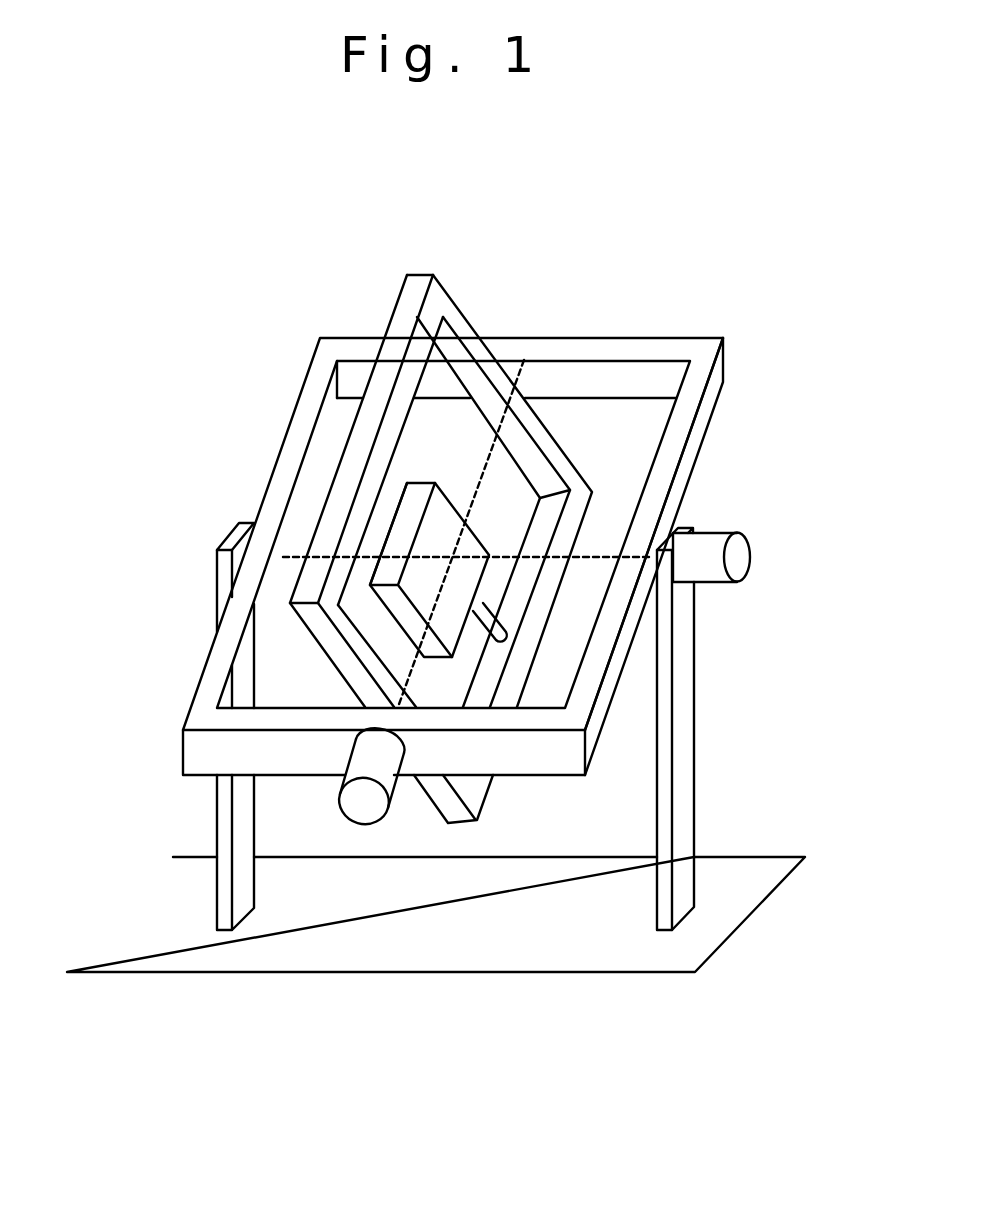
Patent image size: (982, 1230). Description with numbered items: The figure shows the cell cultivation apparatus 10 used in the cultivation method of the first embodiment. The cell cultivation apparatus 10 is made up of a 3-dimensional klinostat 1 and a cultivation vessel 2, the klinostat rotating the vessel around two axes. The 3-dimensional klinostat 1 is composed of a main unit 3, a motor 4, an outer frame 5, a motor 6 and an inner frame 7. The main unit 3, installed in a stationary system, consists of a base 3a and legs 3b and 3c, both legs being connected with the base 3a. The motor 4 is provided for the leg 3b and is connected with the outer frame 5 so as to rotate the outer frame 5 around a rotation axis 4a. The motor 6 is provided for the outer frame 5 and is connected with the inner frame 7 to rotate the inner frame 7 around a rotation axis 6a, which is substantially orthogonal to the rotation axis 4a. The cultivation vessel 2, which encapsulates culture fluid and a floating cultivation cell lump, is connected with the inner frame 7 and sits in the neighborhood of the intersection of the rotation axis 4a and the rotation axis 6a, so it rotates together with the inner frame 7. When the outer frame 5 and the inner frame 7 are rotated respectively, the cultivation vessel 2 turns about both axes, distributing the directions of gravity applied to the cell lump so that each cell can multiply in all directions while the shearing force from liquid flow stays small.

The cell cultivation apparatus 10 is at (663, 215).
The 3-dimensional klinostat 1 is at (567, 350).
The cultivation vessel 2 is at (413, 502).
The main unit 3 is at (147, 923).
The base 3a is at (567, 938).
The leg 3b is at (683, 727).
The leg 3c is at (225, 572).
The motor 4 is at (700, 552).
The rotation axis 4a is at (593, 557).
The outer frame 5 is at (675, 437).
The motor 6 is at (370, 800).
The rotation axis 6a is at (412, 667).
The inner frame 7 is at (437, 307).